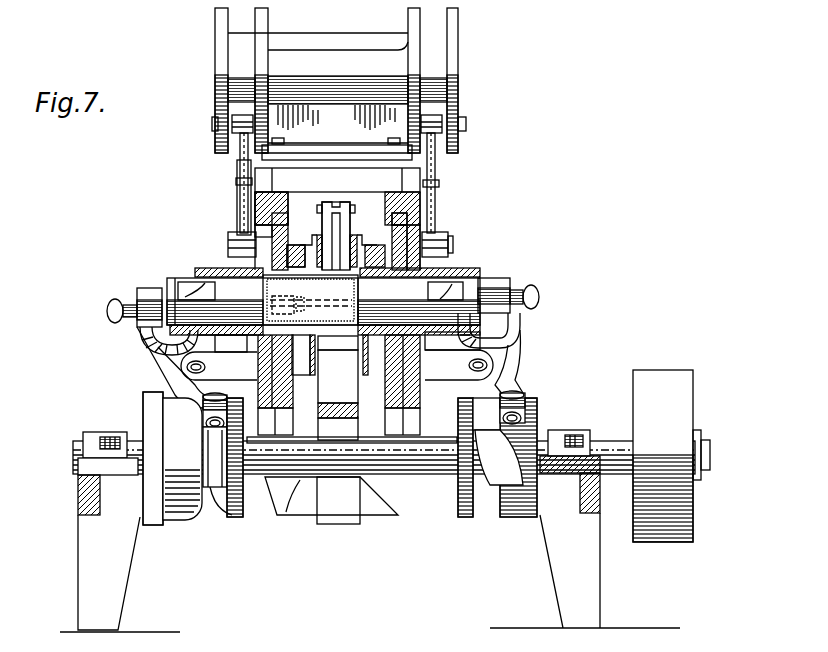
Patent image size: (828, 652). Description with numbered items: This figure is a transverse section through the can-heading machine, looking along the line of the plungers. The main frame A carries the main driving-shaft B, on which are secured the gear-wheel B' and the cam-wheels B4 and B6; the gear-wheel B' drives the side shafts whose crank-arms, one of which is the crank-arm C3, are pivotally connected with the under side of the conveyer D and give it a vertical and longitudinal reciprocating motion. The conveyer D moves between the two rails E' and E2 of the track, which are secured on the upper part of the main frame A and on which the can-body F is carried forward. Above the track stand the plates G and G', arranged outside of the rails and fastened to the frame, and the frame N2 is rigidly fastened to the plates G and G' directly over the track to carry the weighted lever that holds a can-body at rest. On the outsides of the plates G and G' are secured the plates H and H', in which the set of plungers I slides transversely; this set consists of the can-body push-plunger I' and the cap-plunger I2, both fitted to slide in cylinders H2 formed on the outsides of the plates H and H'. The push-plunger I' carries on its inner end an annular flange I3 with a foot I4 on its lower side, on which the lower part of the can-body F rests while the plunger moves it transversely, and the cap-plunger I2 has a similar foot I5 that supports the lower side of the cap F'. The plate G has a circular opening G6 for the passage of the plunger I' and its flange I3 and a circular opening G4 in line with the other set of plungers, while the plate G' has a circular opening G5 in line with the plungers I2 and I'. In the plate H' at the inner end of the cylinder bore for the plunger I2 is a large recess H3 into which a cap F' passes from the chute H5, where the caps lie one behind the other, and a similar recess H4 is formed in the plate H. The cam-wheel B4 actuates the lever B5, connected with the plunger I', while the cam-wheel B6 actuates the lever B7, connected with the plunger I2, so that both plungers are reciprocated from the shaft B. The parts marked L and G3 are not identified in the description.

The upper frame standards L is at (256, 36).
The plate H is at (353, 183).
The plate H' is at (229, 197).
The cylinders H2 is at (464, 250).
The recess H3 is at (262, 364).
The recess H4 is at (206, 368).
The chute H5 is at (458, 166).
The plate G is at (337, 222).
The plate G' is at (337, 308).
The housing wedge G3 is at (289, 240).
The circular opening G4 is at (392, 220).
The circular opening G5 is at (296, 320).
The circular opening G6 is at (360, 358).
The frame N2 is at (342, 240).
The set of plungers I is at (323, 287).
The can-body push-plunger I' is at (427, 291).
The cap-plunger I2 is at (215, 292).
The annular flange I3 is at (352, 304).
The foot I4 is at (358, 340).
The foot I5 is at (250, 340).
The can-body F is at (310, 300).
The cap F' is at (282, 310).
The rail E' is at (339, 371).
The rail E2 is at (310, 350).
The conveyer D is at (320, 440).
The crank-arm C3 is at (331, 500).
The main driving-shaft B is at (391, 456).
The gear-wheel B' is at (172, 472).
The cam-wheel B4 is at (528, 405).
The lever B5 is at (512, 345).
The cam-wheel B6 is at (234, 518).
The lever B7 is at (160, 345).
The main frame A is at (548, 582).